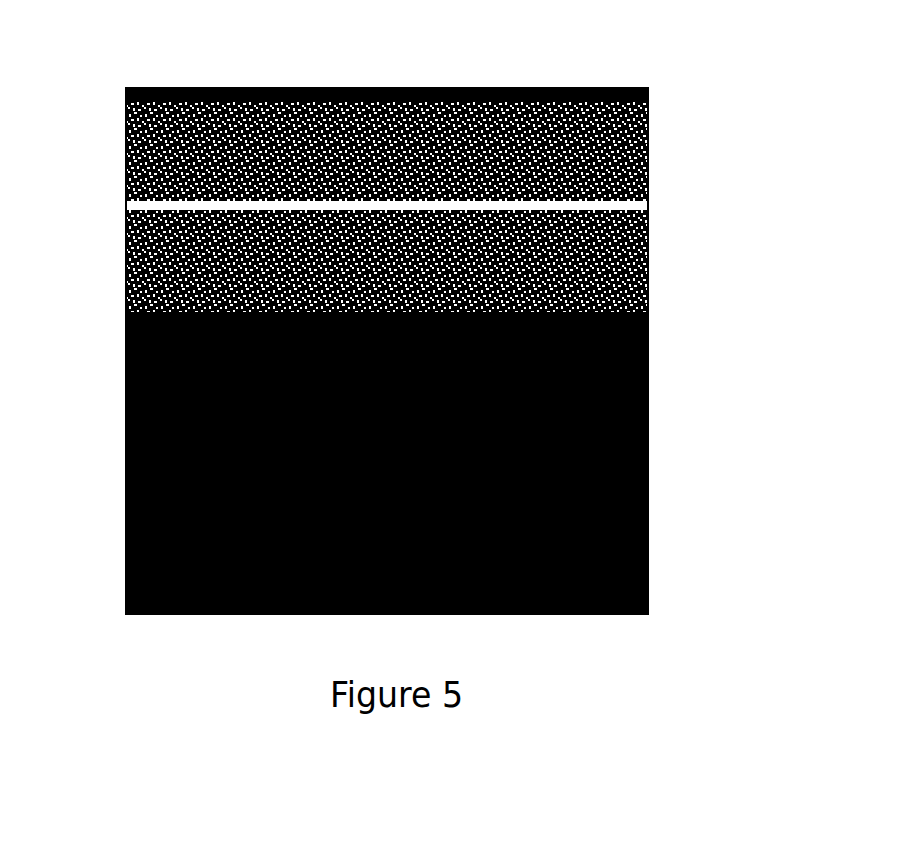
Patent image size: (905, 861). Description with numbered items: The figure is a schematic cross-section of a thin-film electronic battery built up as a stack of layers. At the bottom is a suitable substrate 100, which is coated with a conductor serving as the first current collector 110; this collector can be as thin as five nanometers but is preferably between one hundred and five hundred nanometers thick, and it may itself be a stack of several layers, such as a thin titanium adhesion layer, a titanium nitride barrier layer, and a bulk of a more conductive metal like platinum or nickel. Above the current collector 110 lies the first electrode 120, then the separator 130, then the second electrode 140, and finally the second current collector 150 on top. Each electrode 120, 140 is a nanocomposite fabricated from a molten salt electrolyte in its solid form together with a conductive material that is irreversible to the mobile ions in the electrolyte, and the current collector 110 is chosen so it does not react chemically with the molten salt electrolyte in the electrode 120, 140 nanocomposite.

The substrate 100 is at (387, 463).
The first current collector 110 is at (654, 319).
The first electrode 120 is at (387, 261).
The separator 130 is at (655, 204).
The second electrode 140 is at (387, 151).
The second current collector 150 is at (654, 87).